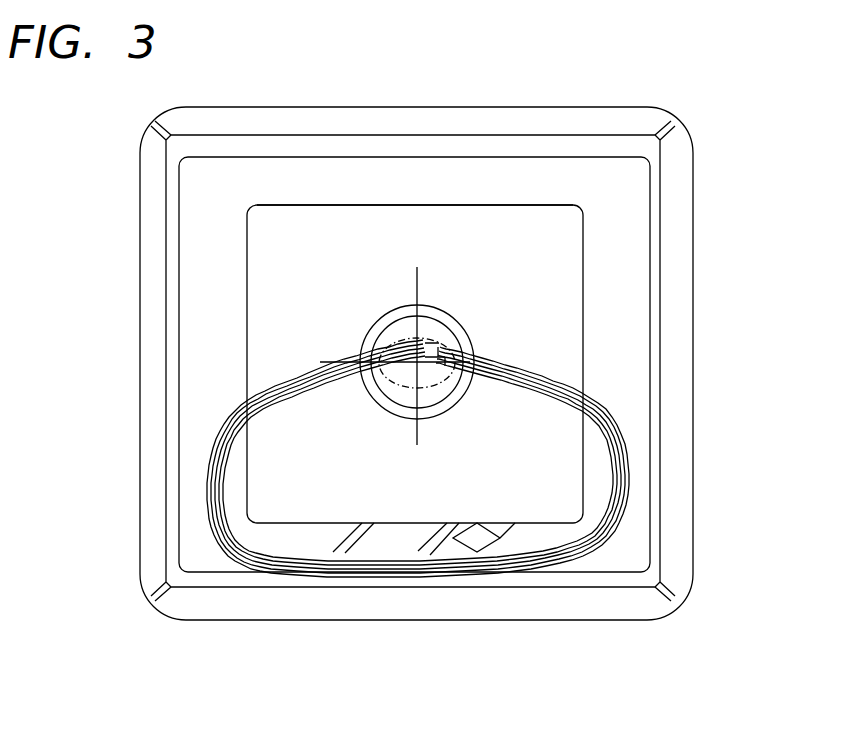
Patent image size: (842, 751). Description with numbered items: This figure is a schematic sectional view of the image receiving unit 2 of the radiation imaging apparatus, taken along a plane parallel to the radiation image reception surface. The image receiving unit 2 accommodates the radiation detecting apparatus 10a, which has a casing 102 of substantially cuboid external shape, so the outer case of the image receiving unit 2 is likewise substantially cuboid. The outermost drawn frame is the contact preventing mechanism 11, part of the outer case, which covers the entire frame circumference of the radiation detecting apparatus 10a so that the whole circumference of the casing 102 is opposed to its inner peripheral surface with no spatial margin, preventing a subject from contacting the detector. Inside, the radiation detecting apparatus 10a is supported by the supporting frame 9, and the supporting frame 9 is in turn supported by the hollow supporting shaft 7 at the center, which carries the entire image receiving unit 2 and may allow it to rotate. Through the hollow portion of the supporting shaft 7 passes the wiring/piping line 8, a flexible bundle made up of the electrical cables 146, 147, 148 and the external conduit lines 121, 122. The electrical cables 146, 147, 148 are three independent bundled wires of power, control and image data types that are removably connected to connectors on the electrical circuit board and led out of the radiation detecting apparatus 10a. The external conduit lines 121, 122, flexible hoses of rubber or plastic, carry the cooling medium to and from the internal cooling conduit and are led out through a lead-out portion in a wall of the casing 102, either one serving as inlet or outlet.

The image receiving unit 2 is at (243, 644).
The supporting shaft 7 is at (452, 320).
The wiring/piping line 8 is at (440, 350).
The supporting frame 9 is at (318, 224).
The radiation detecting apparatus 10a is at (536, 170).
The contact preventing mechanism 11 is at (152, 293).
The casing 102 is at (413, 202).
The external conduit line 121 is at (628, 458).
The external conduit line 122 is at (603, 410).
The electrical cable 146 is at (213, 502).
The electrical cable 147 is at (222, 481).
The electrical cable 148 is at (213, 455).